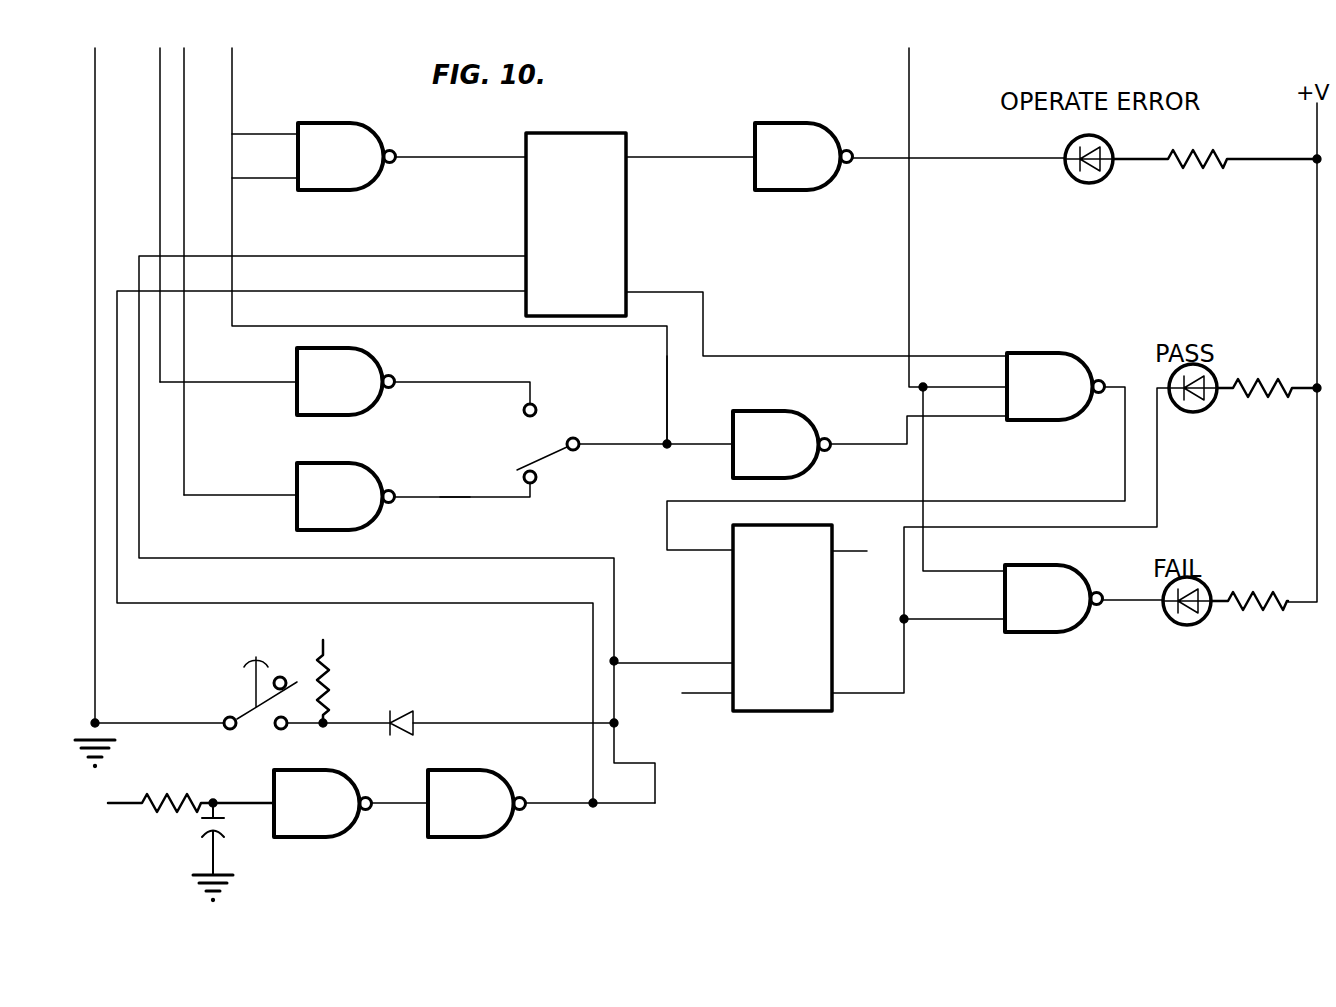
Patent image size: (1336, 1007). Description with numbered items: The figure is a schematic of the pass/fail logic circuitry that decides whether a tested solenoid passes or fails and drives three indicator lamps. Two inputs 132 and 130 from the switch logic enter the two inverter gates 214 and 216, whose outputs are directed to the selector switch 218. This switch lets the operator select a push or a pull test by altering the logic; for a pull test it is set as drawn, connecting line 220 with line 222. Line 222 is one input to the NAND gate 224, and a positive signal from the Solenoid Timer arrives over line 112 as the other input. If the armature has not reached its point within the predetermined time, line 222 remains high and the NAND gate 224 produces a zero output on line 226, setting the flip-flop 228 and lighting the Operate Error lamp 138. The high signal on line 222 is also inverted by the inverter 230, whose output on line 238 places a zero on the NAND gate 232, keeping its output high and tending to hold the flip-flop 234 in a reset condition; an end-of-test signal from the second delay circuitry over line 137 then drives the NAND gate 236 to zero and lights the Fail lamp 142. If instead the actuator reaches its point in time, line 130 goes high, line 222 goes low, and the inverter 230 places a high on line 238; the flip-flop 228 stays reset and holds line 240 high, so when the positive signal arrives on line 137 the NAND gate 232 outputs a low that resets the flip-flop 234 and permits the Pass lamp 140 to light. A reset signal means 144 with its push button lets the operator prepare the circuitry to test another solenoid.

The input line 132 is at (160, 80).
The input line 130 is at (184, 113).
The line 112 is at (232, 113).
The NAND gate 224 is at (338, 123).
The line 226 is at (474, 152).
The flip-flop 228 is at (573, 133).
The line 137 is at (909, 81).
The Operate Error lamp 138 is at (1080, 183).
The line 240 is at (808, 356).
The NAND gate 232 is at (1054, 366).
The inverter gate 214 is at (382, 351).
The inverter gate 216 is at (382, 461).
The SW1 switch 218 is at (536, 440).
The line 220 is at (432, 502).
The line 222 is at (681, 368).
The inverter 230 is at (794, 414).
The line 238 is at (990, 418).
The flip-flop 234 is at (812, 712).
The NAND gate 236 is at (1014, 635).
The Pass lamp 140 is at (1188, 414).
The Fail lamp 142 is at (1190, 628).
The reset signal means 144 is at (336, 706).